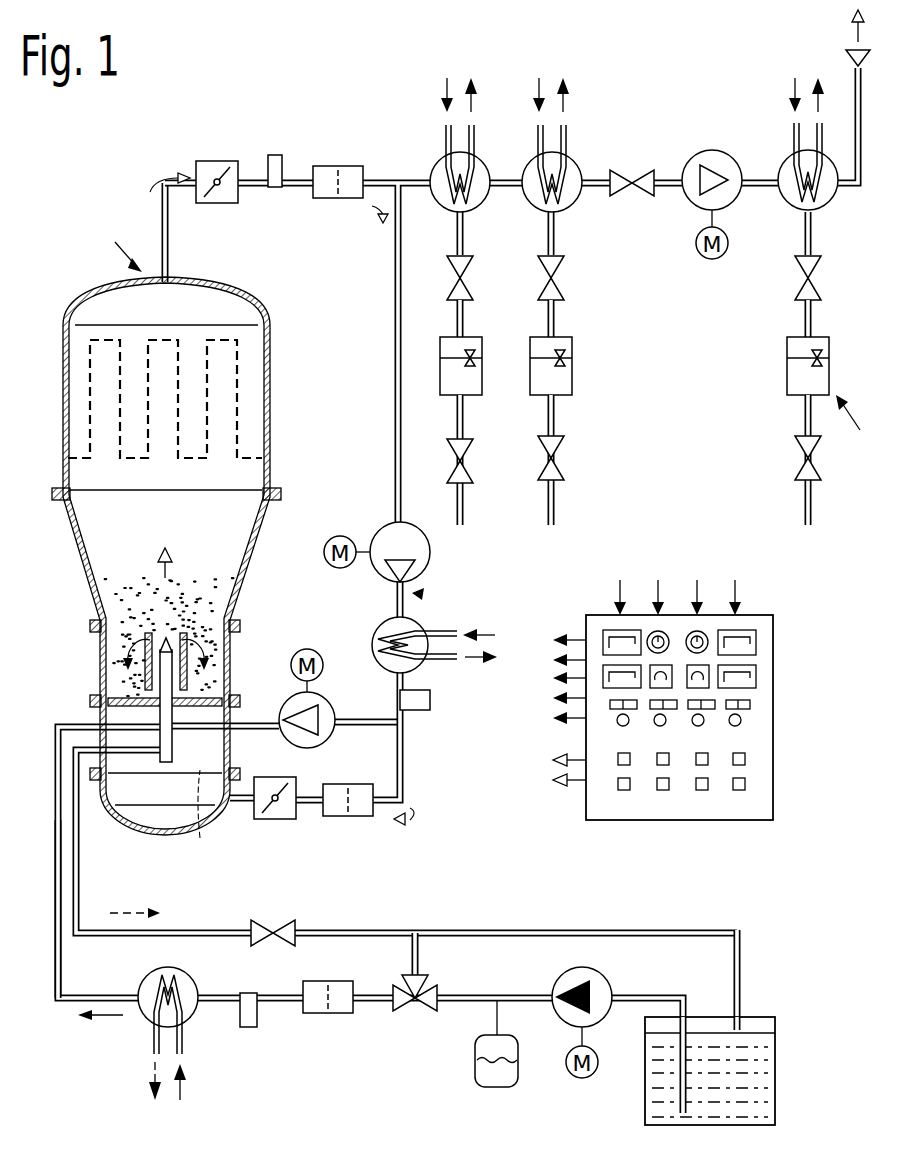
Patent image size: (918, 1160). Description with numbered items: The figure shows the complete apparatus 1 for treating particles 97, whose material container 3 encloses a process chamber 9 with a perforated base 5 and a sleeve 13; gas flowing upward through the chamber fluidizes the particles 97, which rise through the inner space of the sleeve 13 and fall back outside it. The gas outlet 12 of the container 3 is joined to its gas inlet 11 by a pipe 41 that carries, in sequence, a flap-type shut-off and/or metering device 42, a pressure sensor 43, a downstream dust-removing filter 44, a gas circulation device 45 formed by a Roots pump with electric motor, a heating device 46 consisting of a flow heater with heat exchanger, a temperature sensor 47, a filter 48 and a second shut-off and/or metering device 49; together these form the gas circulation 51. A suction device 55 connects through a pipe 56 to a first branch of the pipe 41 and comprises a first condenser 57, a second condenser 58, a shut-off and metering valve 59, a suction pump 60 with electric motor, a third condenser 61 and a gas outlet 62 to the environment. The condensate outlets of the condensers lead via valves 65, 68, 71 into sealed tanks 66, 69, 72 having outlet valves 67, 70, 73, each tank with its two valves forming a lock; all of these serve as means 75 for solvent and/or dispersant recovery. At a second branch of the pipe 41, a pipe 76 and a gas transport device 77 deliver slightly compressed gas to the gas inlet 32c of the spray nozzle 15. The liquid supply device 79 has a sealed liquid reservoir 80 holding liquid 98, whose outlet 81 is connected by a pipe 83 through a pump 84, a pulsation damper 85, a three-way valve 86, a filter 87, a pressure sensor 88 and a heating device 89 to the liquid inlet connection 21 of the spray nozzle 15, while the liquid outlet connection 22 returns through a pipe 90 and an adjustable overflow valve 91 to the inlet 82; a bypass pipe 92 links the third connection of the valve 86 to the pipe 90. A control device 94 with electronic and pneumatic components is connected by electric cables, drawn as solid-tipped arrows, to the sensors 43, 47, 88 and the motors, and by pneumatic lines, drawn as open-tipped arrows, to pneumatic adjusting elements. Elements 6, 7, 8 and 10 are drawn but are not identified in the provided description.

The apparatus 1 is at (120, 242).
The container 3 is at (66, 300).
The perforated base 5 is at (108, 702).
The heating coil 6 is at (240, 388).
The vessel bottom 7 is at (132, 808).
The liquid sump 8 is at (152, 800).
The process chamber 9 is at (218, 586).
The upper chamber 10 is at (236, 305).
The gas inlet 11 is at (240, 815).
The gas outlet 12 is at (170, 278).
The sleeve 13 is at (128, 668).
The spray nozzle 15 is at (196, 812).
The liquid inlet connection 21 is at (100, 720).
The liquid outlet connection 22 is at (120, 752).
The gas inlet 32c is at (172, 726).
The pipe 41 is at (395, 292).
The shut-off and/or metering device 42 is at (215, 158).
The pressure sensor 43 is at (272, 152).
The downstream dust-removing filter 44 is at (350, 165).
The gas circulation device 45 is at (382, 528).
The heating device 46 is at (375, 640).
The temperature sensor 47 is at (420, 710).
The filter 48 is at (360, 818).
The shut-off and/or metering device 49 is at (295, 820).
The gas circulation 51 is at (424, 594).
The suction device 55 is at (424, 118).
The pipe 56 is at (432, 178).
The first condenser 57 is at (482, 150).
The second condenser 58 is at (578, 162).
The shut-off and metering valve 59 is at (636, 168).
The suction pump 60 is at (725, 152).
The third condenser 61 is at (782, 160).
The gas outlet 62 is at (848, 82).
The valve 65 is at (450, 276).
The tank 66 is at (440, 342).
The valve 67 is at (455, 460).
The valve 68 is at (560, 280).
The tank 69 is at (572, 345).
The valve 70 is at (558, 458).
The valve 71 is at (818, 280).
The tank 72 is at (790, 338).
The valve 73 is at (804, 455).
The means for solvent and/or dispersant recovery 75 is at (854, 429).
The pipe 76 is at (362, 728).
The gas transport device 77 is at (330, 718).
The liquid supply device 79 is at (48, 892).
The liquid reservoir 80 is at (776, 1105).
The outlet 81 is at (698, 1000).
The inlet 82 is at (752, 1008).
The pipe 83 is at (652, 990).
The pump 84 is at (565, 1025).
The pulsation damper 85 is at (496, 1090).
The three-way valve 86 is at (414, 1015).
The filter 87 is at (320, 1018).
The pressure sensor 88 is at (250, 1030).
The heating device 89 is at (145, 1025).
The pipe 90 is at (222, 918).
The adjustable overflow valve 91 is at (278, 925).
The bypass pipe 92 is at (422, 950).
The control device 94 is at (698, 826).
The particles 97 is at (102, 608).
The liquid 98 is at (752, 1028).